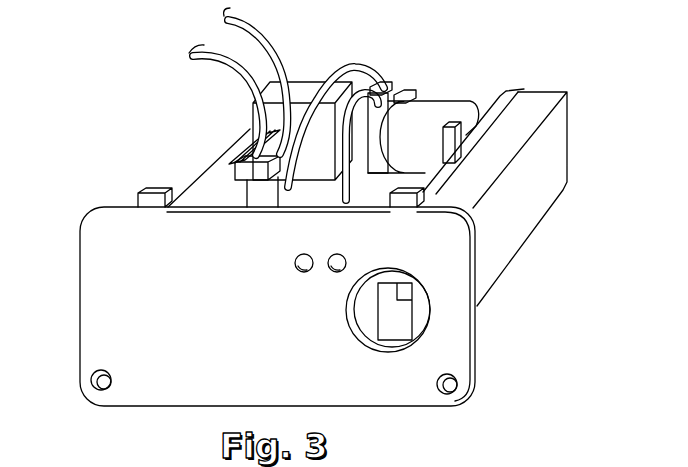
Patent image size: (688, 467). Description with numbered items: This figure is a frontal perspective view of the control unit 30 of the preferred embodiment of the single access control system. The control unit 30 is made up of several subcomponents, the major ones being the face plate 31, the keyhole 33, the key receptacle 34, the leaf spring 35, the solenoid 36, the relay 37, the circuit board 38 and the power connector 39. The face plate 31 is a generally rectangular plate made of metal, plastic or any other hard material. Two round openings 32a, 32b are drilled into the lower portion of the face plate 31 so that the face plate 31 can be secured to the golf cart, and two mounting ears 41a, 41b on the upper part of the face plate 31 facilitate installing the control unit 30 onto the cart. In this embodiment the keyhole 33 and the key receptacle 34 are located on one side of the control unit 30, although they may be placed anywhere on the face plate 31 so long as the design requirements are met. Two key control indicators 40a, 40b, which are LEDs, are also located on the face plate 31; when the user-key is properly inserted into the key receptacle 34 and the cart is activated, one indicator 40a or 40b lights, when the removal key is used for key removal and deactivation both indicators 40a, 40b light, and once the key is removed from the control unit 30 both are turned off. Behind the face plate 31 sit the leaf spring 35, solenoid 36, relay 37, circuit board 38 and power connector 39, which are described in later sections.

The control unit 30 is at (126, 82).
The face plate 31 is at (243, 374).
The round opening 32a is at (100, 389).
The round opening 32b is at (446, 394).
The keyhole 33 is at (426, 326).
The key receptacle 34 is at (513, 220).
The leaf spring 35 is at (503, 92).
The solenoid 36 is at (402, 138).
The relay 37 is at (308, 80).
The circuit board 38 is at (203, 178).
The power connector 39 is at (226, 164).
The key control indicator 40a is at (293, 263).
The key control indicator 40b is at (337, 274).
The mounting ear 41a is at (150, 190).
The mounting ear 41b is at (405, 205).